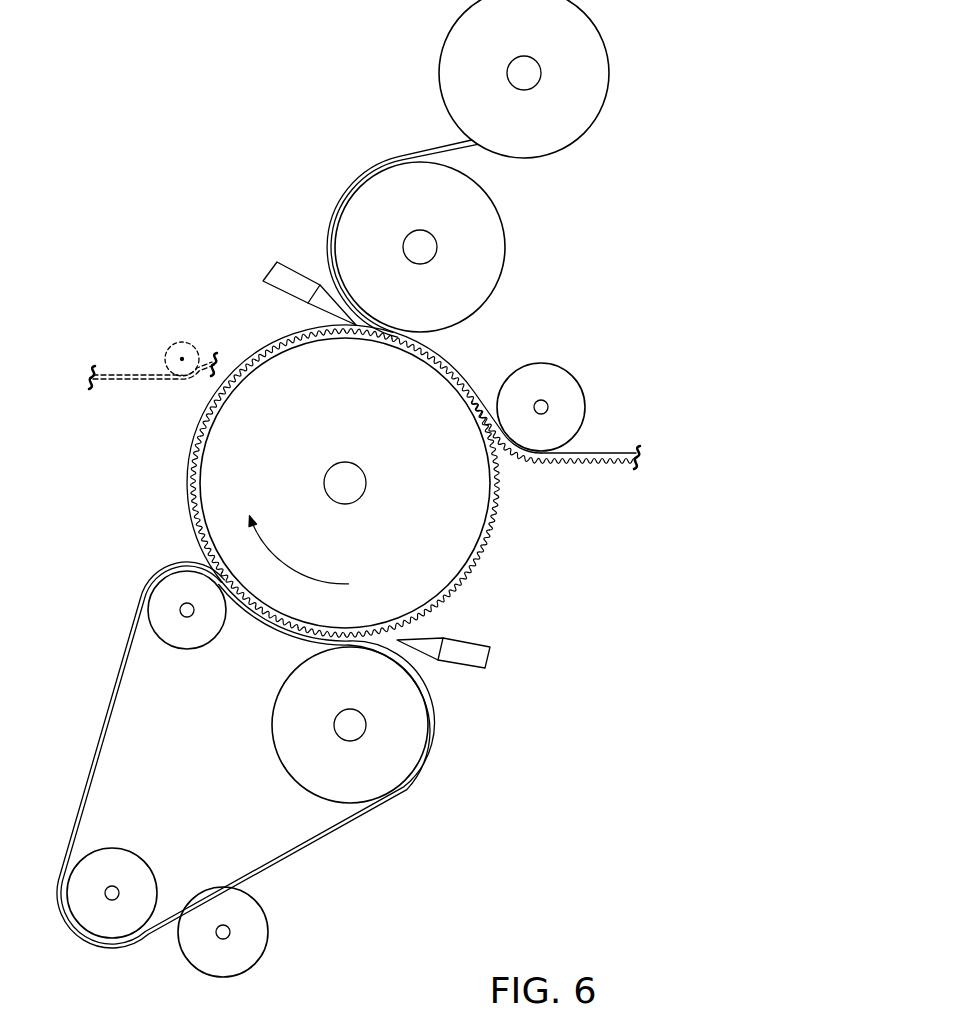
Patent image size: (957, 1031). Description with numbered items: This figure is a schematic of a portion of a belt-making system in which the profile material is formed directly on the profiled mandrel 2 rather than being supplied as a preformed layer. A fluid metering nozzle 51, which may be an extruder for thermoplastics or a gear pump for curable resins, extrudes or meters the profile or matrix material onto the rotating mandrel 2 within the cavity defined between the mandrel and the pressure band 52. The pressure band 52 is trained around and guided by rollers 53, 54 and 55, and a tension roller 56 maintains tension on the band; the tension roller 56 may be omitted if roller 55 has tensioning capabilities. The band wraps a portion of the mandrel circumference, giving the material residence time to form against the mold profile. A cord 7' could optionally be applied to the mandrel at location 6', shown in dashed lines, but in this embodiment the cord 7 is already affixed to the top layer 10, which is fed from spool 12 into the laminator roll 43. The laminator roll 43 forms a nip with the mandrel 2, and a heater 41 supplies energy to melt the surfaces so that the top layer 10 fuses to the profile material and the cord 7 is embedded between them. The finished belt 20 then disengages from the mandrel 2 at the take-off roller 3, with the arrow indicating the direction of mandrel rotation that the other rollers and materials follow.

The mandrel 2 is at (440, 543).
The take-off roller 3 is at (555, 373).
The cord 7 is at (329, 351).
The cord 7' is at (153, 360).
The cord application location 6' is at (176, 339).
The top layer 10 is at (453, 147).
The spool 12 is at (588, 108).
The finished belt 20 is at (607, 455).
The heater 41 is at (277, 273).
The laminator roll 43 is at (490, 213).
The fluid metering nozzle 51 is at (477, 660).
The pressure band 52 is at (102, 750).
The roller 53 is at (402, 760).
The roller 54 is at (162, 620).
The roller 55 is at (90, 917).
The tension roller 56 is at (253, 942).